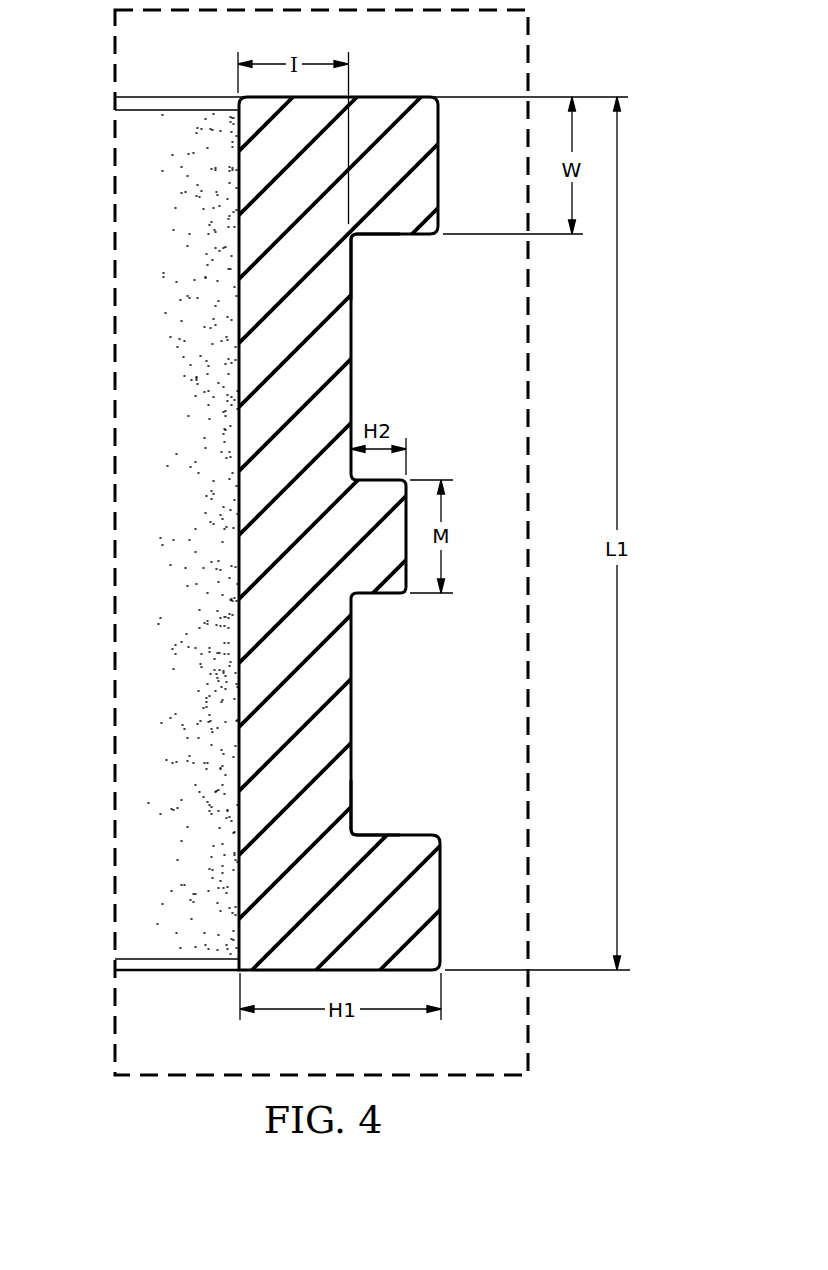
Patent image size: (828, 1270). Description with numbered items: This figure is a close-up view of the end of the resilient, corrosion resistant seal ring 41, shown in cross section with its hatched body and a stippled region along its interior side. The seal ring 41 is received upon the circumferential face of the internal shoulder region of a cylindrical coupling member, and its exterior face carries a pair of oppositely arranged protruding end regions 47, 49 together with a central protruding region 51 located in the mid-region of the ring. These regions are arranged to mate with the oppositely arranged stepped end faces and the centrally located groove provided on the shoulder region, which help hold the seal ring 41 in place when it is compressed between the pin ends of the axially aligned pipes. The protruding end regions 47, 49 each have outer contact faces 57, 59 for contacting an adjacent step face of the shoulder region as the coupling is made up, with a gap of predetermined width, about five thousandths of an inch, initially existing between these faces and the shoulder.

The seal ring 41 is at (343, 720).
The protruding end region 47 is at (384, 237).
The protruding end region 49 is at (408, 834).
The central protruding region 51 is at (386, 595).
The outer contact face 57 is at (440, 183).
The outer contact face 59 is at (442, 926).